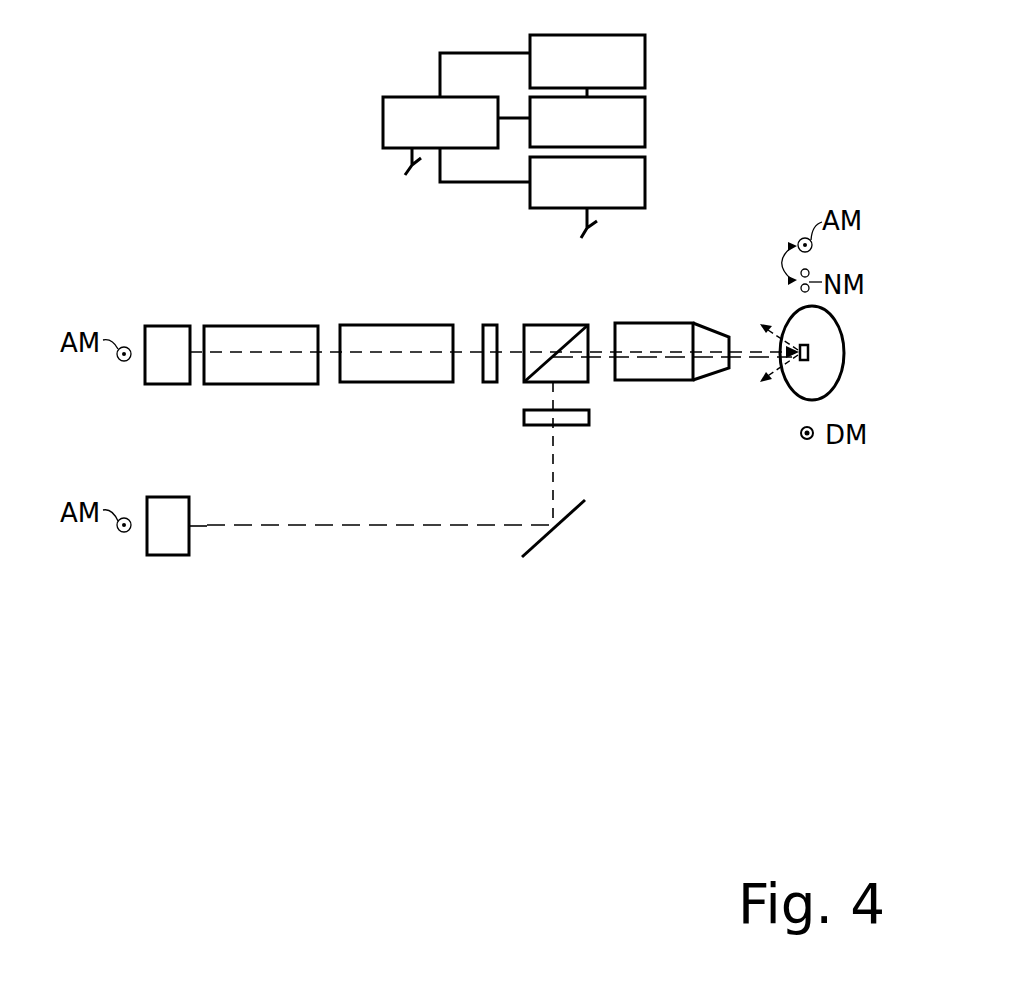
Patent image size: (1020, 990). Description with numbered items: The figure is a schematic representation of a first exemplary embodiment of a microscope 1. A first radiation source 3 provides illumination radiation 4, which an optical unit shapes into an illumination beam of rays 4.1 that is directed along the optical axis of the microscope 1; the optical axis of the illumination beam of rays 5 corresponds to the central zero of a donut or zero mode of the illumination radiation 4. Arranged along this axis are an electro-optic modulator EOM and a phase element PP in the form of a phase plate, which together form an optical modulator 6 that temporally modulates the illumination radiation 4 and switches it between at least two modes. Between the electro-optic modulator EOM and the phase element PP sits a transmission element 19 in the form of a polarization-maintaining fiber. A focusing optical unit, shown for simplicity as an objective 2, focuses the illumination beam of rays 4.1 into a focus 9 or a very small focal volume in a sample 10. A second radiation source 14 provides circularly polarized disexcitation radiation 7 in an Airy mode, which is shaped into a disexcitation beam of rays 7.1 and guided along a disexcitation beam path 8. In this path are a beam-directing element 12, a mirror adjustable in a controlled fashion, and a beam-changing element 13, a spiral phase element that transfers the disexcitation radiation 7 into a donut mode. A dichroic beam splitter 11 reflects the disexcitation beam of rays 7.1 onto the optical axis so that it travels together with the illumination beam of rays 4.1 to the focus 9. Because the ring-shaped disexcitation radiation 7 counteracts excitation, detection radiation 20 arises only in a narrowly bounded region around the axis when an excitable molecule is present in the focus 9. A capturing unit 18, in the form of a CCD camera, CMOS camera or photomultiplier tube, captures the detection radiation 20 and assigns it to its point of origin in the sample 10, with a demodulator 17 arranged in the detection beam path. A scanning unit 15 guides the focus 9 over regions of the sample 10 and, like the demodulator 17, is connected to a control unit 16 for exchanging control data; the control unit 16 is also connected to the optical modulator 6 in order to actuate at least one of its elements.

The microscope 1 is at (313, 50).
The objective 2 is at (661, 337).
The first radiation source 3 is at (170, 340).
The illumination radiation 4 is at (196, 345).
The illumination beam of rays 4.1 is at (197, 356).
The illumination beam of rays 5 is at (471, 370).
The optical modulator 6 is at (470, 292).
The disexcitation radiation 7 is at (227, 516).
The disexcitation beam of rays 7.1 is at (352, 523).
The disexcitation beam path 8 is at (437, 565).
The focus 9 is at (808, 345).
The sample 10 is at (828, 363).
The dichroic beam splitter 11 is at (567, 335).
The beam-directing element 12 is at (543, 540).
The beam-changing element 13 is at (575, 420).
The second radiation source 14 is at (162, 538).
The scanning unit 15 is at (623, 190).
The control unit 16 is at (395, 127).
The demodulator 17 is at (623, 133).
The capturing unit 18 is at (623, 68).
The transmission element 19 is at (401, 338).
The detection radiation 20 is at (770, 330).
The electro-optic modulator EOM is at (262, 340).
The phase element PP is at (493, 336).